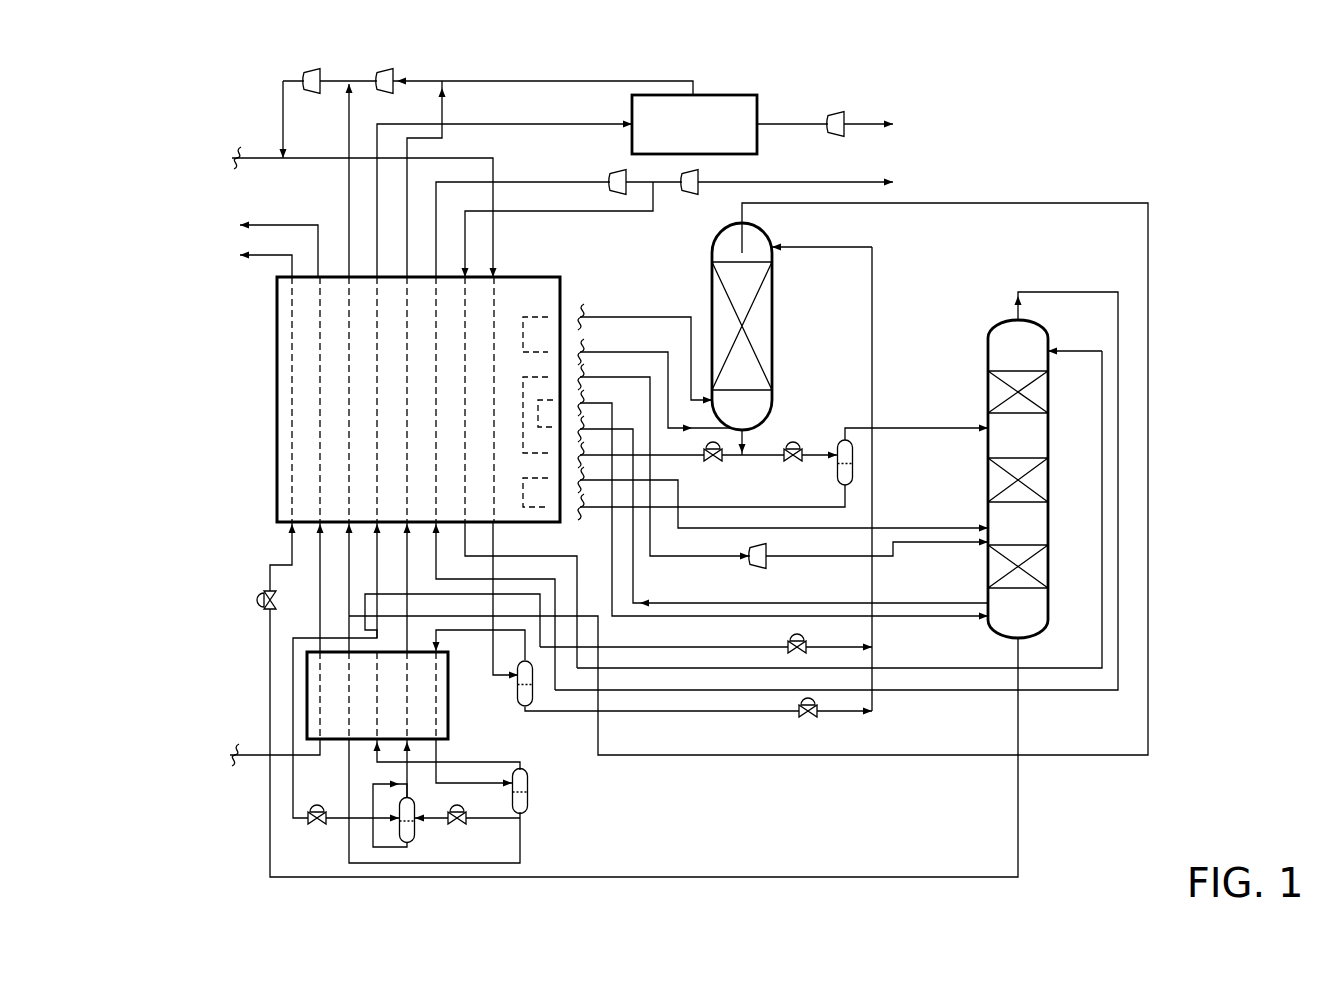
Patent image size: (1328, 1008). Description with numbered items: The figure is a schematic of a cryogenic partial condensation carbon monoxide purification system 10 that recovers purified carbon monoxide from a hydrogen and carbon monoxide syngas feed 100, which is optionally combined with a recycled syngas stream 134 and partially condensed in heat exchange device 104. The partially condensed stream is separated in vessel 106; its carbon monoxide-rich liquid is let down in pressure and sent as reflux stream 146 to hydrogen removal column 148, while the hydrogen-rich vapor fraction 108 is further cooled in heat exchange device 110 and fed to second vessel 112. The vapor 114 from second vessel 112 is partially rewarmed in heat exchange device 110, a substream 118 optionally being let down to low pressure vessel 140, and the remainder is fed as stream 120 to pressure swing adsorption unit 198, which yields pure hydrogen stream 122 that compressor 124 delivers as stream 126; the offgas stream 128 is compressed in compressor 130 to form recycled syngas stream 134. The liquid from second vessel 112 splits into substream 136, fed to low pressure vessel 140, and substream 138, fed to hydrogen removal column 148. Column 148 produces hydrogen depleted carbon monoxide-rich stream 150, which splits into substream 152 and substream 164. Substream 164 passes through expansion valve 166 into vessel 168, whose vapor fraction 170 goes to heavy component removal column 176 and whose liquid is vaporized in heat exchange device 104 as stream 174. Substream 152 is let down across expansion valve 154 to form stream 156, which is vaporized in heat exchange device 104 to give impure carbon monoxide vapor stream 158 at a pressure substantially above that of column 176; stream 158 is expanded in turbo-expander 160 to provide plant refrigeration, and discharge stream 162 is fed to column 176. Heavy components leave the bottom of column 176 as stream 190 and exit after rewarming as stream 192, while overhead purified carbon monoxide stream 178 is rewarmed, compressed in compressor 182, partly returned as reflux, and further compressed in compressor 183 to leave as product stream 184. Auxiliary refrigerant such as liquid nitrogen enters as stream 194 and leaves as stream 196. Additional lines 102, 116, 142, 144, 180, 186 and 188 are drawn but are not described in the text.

The carbon monoxide purification system 10 is at (1113, 147).
The syngas feed 100 is at (266, 161).
The feed line 102 is at (364, 206).
The heat exchange device 104 is at (277, 378).
The vessel 106 is at (518, 692).
The hydrogen-rich vapor fraction 108 is at (479, 644).
The heat exchange device 110 is at (332, 742).
The second vessel 112 is at (528, 787).
The hydrogen-rich vapor 114 is at (447, 754).
The liquid line 116 is at (377, 552).
The substream 118 is at (312, 828).
The stream 120 is at (504, 188).
The pure hydrogen stream 122 is at (792, 138).
The compressor 124 is at (836, 111).
The stream 126 is at (868, 124).
The offgas stream 128 is at (488, 75).
The compressor 130 is at (312, 68).
The recycled syngas stream 134 is at (262, 119).
The substream 136 is at (467, 811).
The substream 138 is at (520, 845).
The low pressure vessel 140 is at (414, 835).
The vapor line 142 is at (443, 104).
The valve 144 is at (706, 637).
The reflux stream 146 is at (872, 283).
The hydrogen removal column 148 is at (772, 350).
The hydrogen depleted carbon monoxide-rich stream 150 is at (766, 431).
The substream 152 is at (745, 456).
The expansion valve 154 is at (710, 463).
The stream 156 is at (641, 449).
The impure carbon monoxide vapor stream 158 is at (664, 462).
The turbo-expander 160 is at (758, 569).
The discharge stream 162 is at (877, 545).
The substream 164 is at (790, 463).
The expansion valve 166 is at (797, 447).
The vessel 168 is at (853, 476).
The vapor fraction 170 is at (916, 422).
The stream 174 is at (783, 499).
The heavy component removal column 176 is at (988, 353).
The overhead purified carbon monoxide stream 178 is at (836, 478).
The line 180 is at (523, 216).
The compressor 182 is at (617, 197).
The compressor 183 is at (690, 197).
The product stream 184 is at (795, 173).
The line 186 is at (558, 229).
The column feed line 188 is at (840, 496).
The stream 190 is at (637, 699).
The stream 192 is at (269, 255).
The stream 194 is at (241, 765).
The stream 196 is at (279, 240).
The pressure swing adsorption unit 198 is at (757, 105).